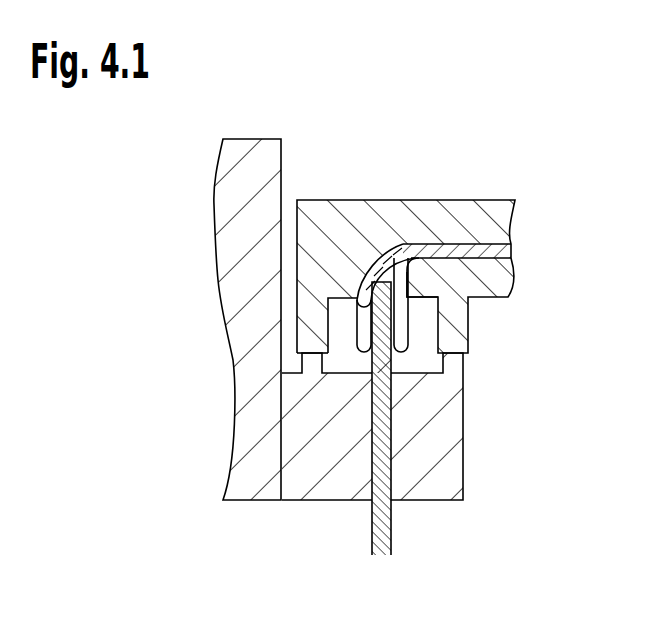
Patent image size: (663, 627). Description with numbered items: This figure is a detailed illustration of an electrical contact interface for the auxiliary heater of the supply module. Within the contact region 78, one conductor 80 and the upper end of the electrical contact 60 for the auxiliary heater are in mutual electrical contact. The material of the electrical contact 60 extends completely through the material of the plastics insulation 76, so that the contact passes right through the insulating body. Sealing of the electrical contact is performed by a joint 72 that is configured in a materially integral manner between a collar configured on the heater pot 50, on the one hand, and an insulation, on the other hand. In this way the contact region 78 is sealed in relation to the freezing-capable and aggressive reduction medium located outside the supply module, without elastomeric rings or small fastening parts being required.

The heater pot 50 is at (232, 210).
The electrical contact 60 is at (382, 465).
The joint 72 is at (316, 352).
The plastics insulation 76 is at (418, 410).
The contact region 78 is at (414, 315).
The conductor 80 is at (482, 244).